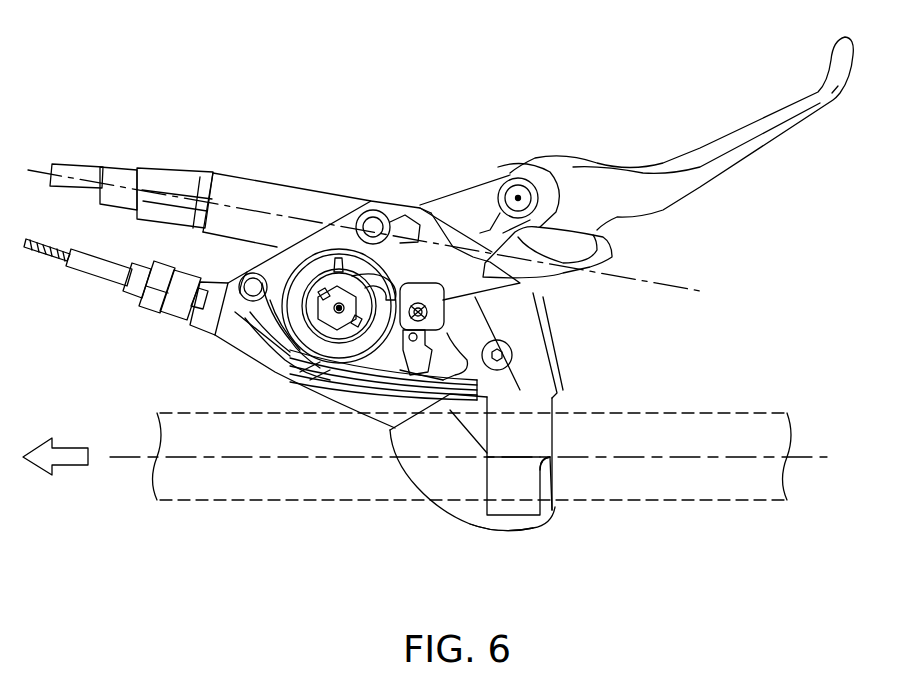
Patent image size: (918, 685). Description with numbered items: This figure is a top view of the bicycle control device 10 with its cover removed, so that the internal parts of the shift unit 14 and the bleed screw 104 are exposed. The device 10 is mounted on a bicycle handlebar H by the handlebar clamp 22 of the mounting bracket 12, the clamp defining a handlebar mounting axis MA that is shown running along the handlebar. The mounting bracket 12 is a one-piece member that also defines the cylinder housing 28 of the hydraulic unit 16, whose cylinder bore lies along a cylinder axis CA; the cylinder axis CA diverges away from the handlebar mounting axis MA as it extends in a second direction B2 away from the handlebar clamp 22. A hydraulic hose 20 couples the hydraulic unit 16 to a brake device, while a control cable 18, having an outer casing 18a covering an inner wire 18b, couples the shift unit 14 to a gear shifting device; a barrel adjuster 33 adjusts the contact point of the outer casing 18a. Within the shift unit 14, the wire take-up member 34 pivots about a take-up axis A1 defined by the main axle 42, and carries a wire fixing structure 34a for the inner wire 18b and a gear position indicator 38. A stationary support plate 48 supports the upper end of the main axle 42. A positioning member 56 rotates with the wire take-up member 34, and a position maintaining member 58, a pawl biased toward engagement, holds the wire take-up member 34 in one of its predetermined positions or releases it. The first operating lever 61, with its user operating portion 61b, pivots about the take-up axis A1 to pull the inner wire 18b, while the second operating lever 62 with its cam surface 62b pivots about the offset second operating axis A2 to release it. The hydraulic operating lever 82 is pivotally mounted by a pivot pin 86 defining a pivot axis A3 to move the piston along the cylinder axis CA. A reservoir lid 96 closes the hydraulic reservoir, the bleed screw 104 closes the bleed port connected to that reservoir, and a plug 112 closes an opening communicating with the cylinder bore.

The bicycle control device 10 is at (168, 72).
The mounting bracket 12 is at (531, 527).
The shift unit 14 is at (270, 378).
The hydraulic unit 16 is at (243, 168).
The control cable 18 is at (25, 300).
The outer casing 18a is at (96, 275).
The inner wire 18b is at (47, 254).
The hydraulic hose 20 is at (72, 164).
The handlebar clamp 22 is at (555, 482).
The cylinder housing 28 is at (280, 183).
The barrel adjuster 33 is at (145, 310).
The wire take-up member 34 is at (354, 258).
The wire fixing structure 34a is at (317, 350).
The gear position indicator 38 is at (337, 350).
The main axle 42 is at (262, 264).
The stationary support plate 48 is at (492, 277).
The positioning member 56 is at (380, 352).
The position maintaining member 58 is at (425, 378).
The first operating lever 61 is at (460, 517).
The user operating portion 61b is at (490, 533).
The second operating lever 62 is at (620, 254).
The cam surface 62b is at (573, 247).
The hydraulic operating lever 82 is at (719, 136).
The pivot pin 86 is at (530, 185).
The reservoir lid 96 is at (556, 377).
The bleed screw 104 is at (500, 372).
The plug 112 is at (392, 222).
The take-up axis A1 is at (339, 303).
The second operating axis A2 is at (420, 312).
The pivot axis A3 is at (515, 196).
The cylinder axis CA is at (668, 287).
The handlebar mounting axis MA is at (813, 455).
The bicycle handlebar H is at (678, 500).
The second direction B2 is at (70, 468).